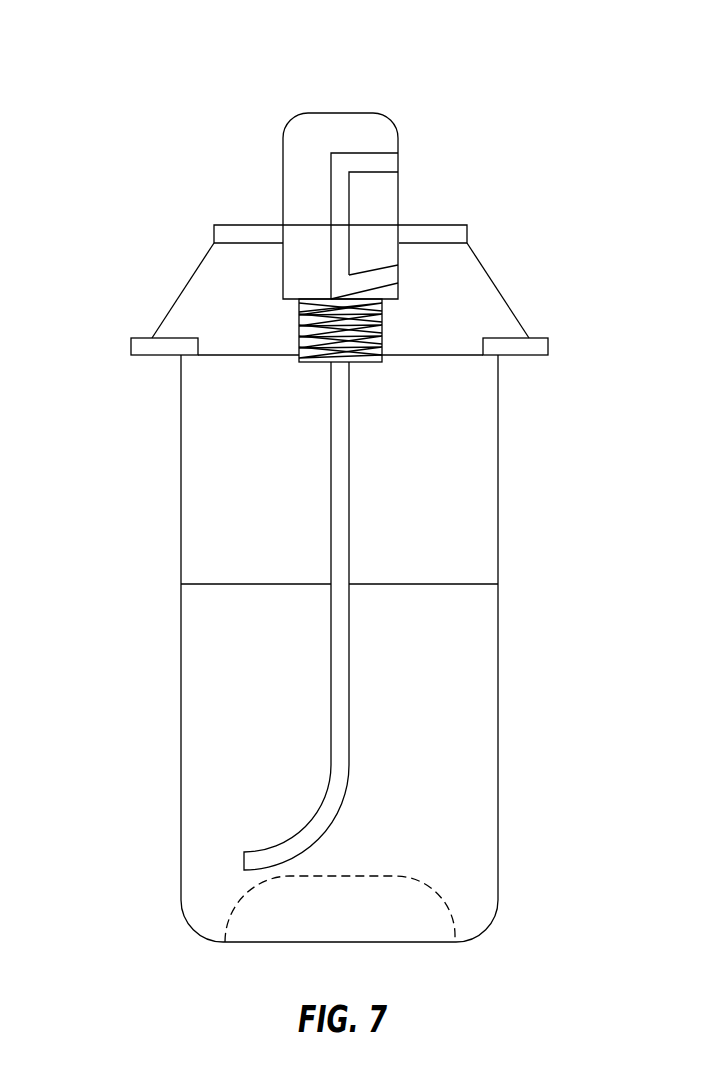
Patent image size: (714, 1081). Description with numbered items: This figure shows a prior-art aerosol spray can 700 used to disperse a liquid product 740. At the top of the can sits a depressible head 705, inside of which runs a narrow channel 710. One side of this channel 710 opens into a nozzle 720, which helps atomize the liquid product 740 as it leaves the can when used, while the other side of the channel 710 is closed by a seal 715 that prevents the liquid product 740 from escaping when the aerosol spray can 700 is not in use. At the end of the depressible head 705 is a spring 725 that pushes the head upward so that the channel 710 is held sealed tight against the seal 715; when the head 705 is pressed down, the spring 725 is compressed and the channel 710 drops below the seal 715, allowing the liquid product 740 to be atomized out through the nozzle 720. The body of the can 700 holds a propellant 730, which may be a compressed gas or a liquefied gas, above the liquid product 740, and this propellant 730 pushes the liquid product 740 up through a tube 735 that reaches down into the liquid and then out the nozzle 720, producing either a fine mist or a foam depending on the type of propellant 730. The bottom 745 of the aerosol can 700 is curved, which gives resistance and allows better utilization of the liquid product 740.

The aerosol spray can 700 is at (167, 64).
The depressible head 705 is at (283, 155).
The narrow channel 710 is at (363, 153).
The nozzle 720 is at (399, 163).
The seal 715 is at (399, 272).
The spring 725 is at (382, 322).
The propellant 730 is at (212, 470).
The tube 735 is at (331, 692).
The liquid product 740 is at (467, 730).
The bottom 745 is at (448, 913).